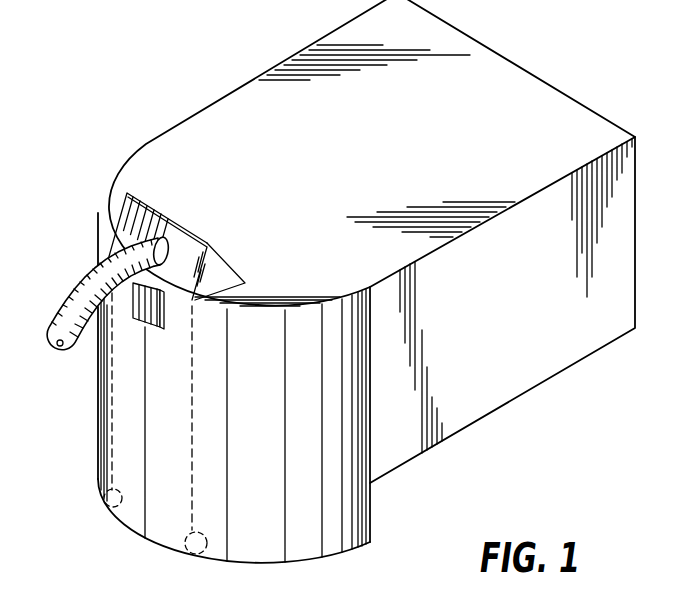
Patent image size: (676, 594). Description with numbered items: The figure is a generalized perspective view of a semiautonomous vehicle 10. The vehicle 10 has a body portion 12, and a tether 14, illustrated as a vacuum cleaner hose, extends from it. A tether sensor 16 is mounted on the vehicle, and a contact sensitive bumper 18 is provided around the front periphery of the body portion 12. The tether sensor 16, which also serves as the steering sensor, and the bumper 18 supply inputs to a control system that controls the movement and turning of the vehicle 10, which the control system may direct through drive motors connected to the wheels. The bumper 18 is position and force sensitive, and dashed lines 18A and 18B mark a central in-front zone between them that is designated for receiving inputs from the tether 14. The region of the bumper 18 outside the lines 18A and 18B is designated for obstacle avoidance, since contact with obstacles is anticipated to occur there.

The semiautonomous vehicle 10 is at (361, 241).
The body portion 12 is at (385, 152).
The tether 14 is at (105, 293).
The tether sensor 16 is at (222, 264).
The contact sensitive bumper 18 is at (287, 527).
The dashed line 18A is at (110, 512).
The dashed line 18B is at (192, 558).